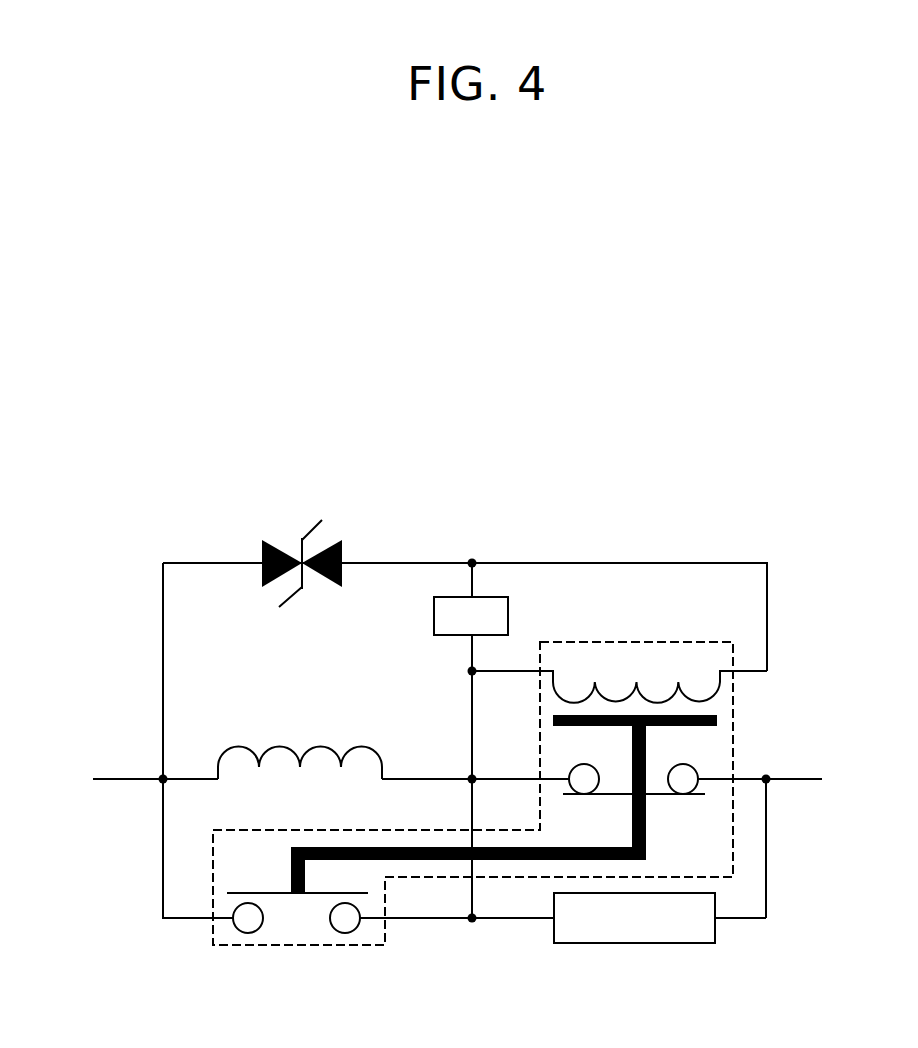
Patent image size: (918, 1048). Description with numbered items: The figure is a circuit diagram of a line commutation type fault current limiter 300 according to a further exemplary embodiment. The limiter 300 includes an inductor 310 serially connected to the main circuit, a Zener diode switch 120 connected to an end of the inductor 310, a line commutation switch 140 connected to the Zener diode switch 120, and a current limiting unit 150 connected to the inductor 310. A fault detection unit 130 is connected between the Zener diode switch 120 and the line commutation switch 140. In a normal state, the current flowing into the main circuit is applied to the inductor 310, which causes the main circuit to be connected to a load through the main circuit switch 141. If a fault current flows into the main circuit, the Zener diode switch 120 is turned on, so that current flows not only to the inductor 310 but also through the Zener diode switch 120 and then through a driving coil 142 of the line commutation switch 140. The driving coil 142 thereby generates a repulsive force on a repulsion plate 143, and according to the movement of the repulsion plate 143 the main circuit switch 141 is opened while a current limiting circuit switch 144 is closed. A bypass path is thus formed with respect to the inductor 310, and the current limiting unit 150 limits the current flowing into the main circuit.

The line commutation type fault current limiter 300 is at (188, 466).
The Zener diode switch 120 is at (354, 535).
The fault detection unit 130 is at (509, 615).
The line commutation switch 140 is at (678, 642).
The main circuit switch 141 is at (635, 796).
The driving coil 142 is at (619, 675).
The repulsion plate 143 is at (702, 726).
The current limiting circuit switch 144 is at (297, 890).
The current limiting unit 150 is at (663, 943).
The inductor 310 is at (205, 730).